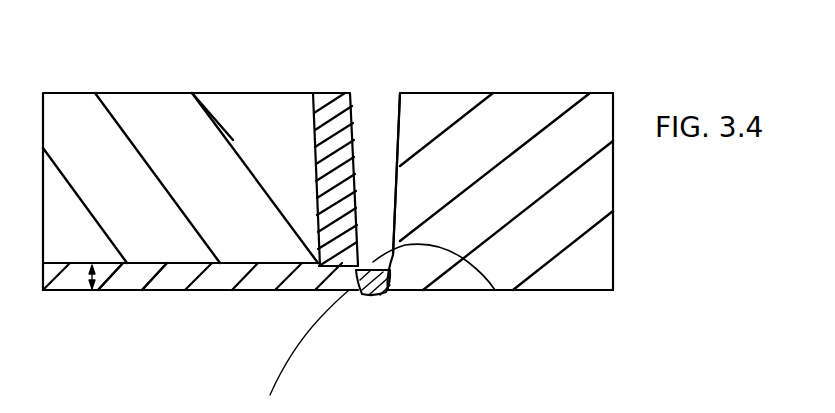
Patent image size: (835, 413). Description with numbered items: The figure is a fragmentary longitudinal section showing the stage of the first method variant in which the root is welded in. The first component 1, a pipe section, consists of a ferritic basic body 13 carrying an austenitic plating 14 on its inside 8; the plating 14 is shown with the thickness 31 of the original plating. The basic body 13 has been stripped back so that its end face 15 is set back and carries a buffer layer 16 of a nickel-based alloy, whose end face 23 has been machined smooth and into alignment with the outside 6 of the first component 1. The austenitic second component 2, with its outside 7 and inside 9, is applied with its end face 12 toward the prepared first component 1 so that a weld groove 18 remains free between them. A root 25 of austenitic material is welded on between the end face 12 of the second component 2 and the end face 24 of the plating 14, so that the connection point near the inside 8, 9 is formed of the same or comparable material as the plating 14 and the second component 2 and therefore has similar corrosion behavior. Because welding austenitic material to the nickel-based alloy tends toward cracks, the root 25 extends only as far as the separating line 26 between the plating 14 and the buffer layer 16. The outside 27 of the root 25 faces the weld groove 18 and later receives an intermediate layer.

The first component 1 is at (147, 140).
The second component 2 is at (586, 108).
The outside of the first component 6 is at (183, 93).
The outside of the second component 7 is at (578, 120).
The inside of the first component 8 is at (198, 288).
The inside of the second component 9 is at (585, 291).
The end face of the second component 12 is at (395, 150).
The basic body 13 is at (205, 135).
The plating 14 is at (143, 288).
The end face of the basic body 15 is at (322, 165).
The buffer layer 16 is at (325, 230).
The weld groove 18 is at (358, 168).
The end face of the buffer layer 23 is at (372, 197).
The end face of the plating 24 is at (370, 291).
The root 25 is at (385, 292).
The separating line 26 is at (355, 266).
The outside of the root 27 is at (495, 290).
The thickness of the original plating 31 is at (92, 276).